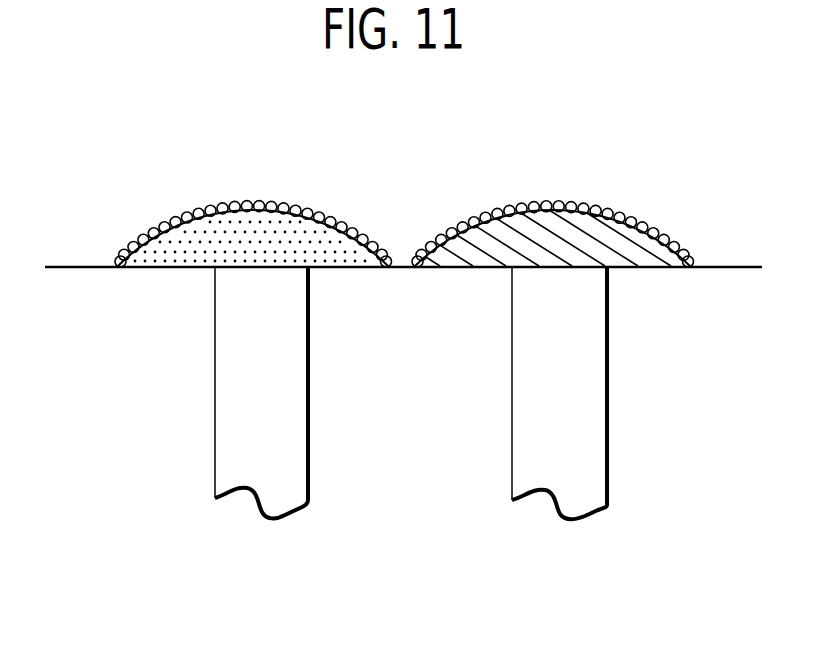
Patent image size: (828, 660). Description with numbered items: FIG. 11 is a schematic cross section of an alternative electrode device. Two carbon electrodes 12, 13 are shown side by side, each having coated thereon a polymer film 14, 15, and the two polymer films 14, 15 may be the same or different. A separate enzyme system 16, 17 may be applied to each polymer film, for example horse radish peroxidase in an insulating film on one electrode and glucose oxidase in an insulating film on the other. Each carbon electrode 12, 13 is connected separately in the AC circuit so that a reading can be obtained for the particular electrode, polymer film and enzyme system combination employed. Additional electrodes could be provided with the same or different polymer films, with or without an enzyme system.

The carbon electrode 12 is at (243, 442).
The carbon electrode 13 is at (561, 449).
The polymer film 14 is at (283, 246).
The polymer film 15 is at (527, 245).
The enzyme system 16 is at (180, 216).
The enzyme system 17 is at (605, 206).